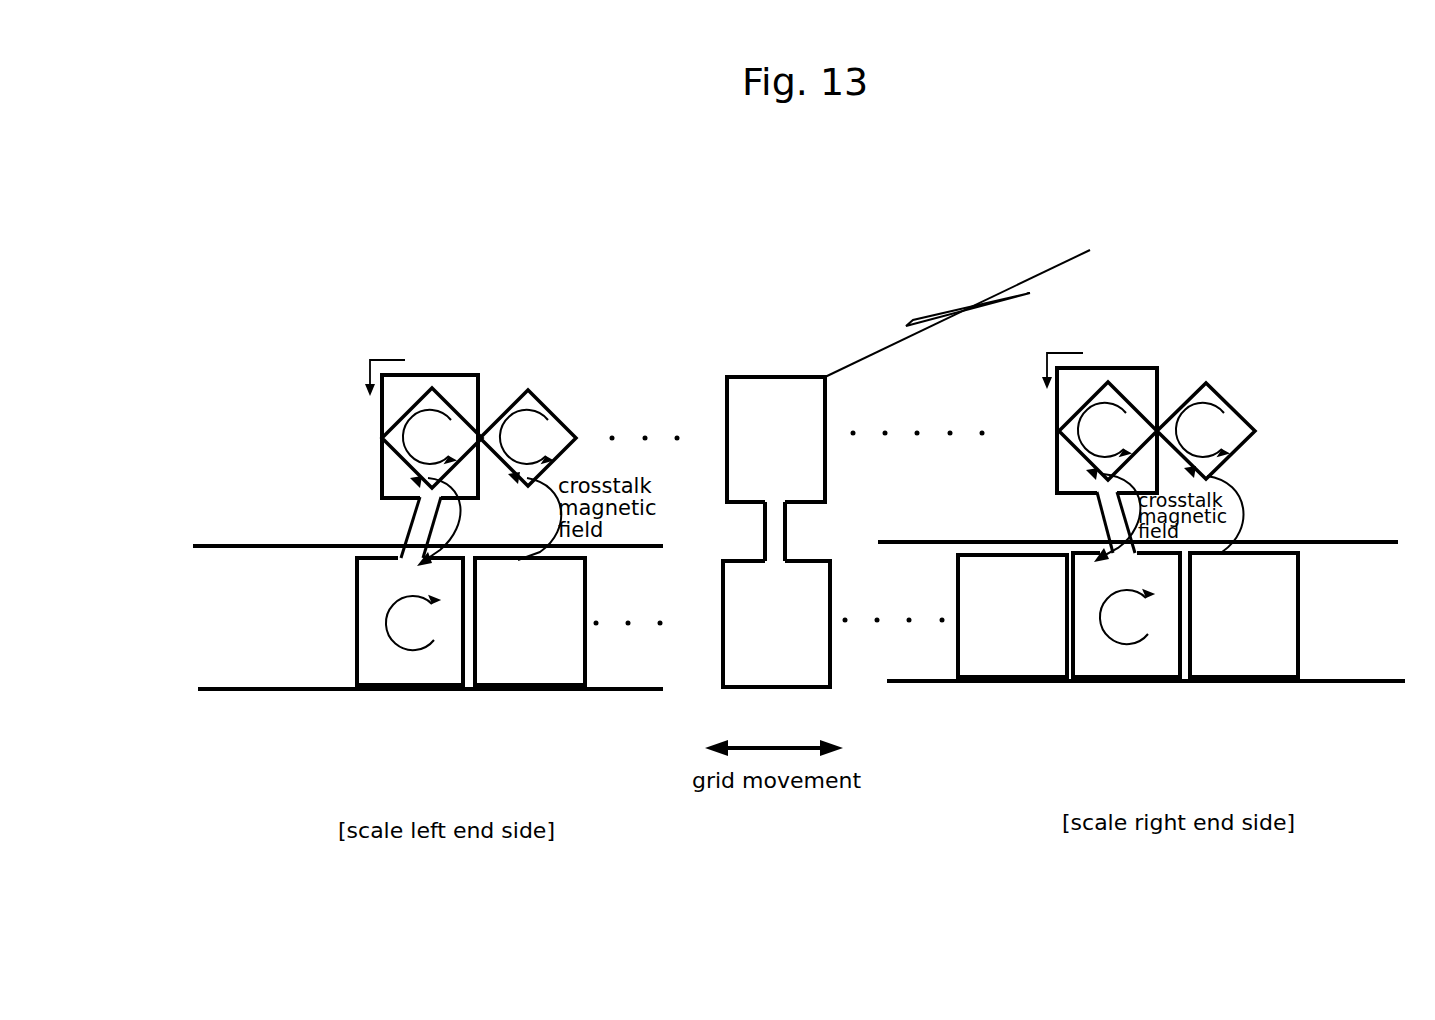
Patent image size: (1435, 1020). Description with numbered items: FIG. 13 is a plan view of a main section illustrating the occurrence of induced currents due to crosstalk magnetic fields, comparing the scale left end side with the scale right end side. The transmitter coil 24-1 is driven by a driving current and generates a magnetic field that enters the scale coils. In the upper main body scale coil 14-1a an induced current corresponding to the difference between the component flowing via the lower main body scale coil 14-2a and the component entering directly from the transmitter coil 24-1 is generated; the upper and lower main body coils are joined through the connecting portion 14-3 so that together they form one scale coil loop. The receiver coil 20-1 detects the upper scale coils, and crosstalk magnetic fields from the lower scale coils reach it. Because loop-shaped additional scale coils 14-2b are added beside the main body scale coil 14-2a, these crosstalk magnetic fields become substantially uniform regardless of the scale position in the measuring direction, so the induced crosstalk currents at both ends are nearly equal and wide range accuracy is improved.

The main body scale coil 14-1a is at (440, 375).
The main body scale coil 14-2a is at (357, 643).
The loop-shaped additional scale coil 14-2b is at (530, 684).
The connecting portion of the scale coils 14-3 is at (408, 531).
The receiver coil 20-1 is at (558, 418).
The transmitter coil 24-1 is at (203, 689).